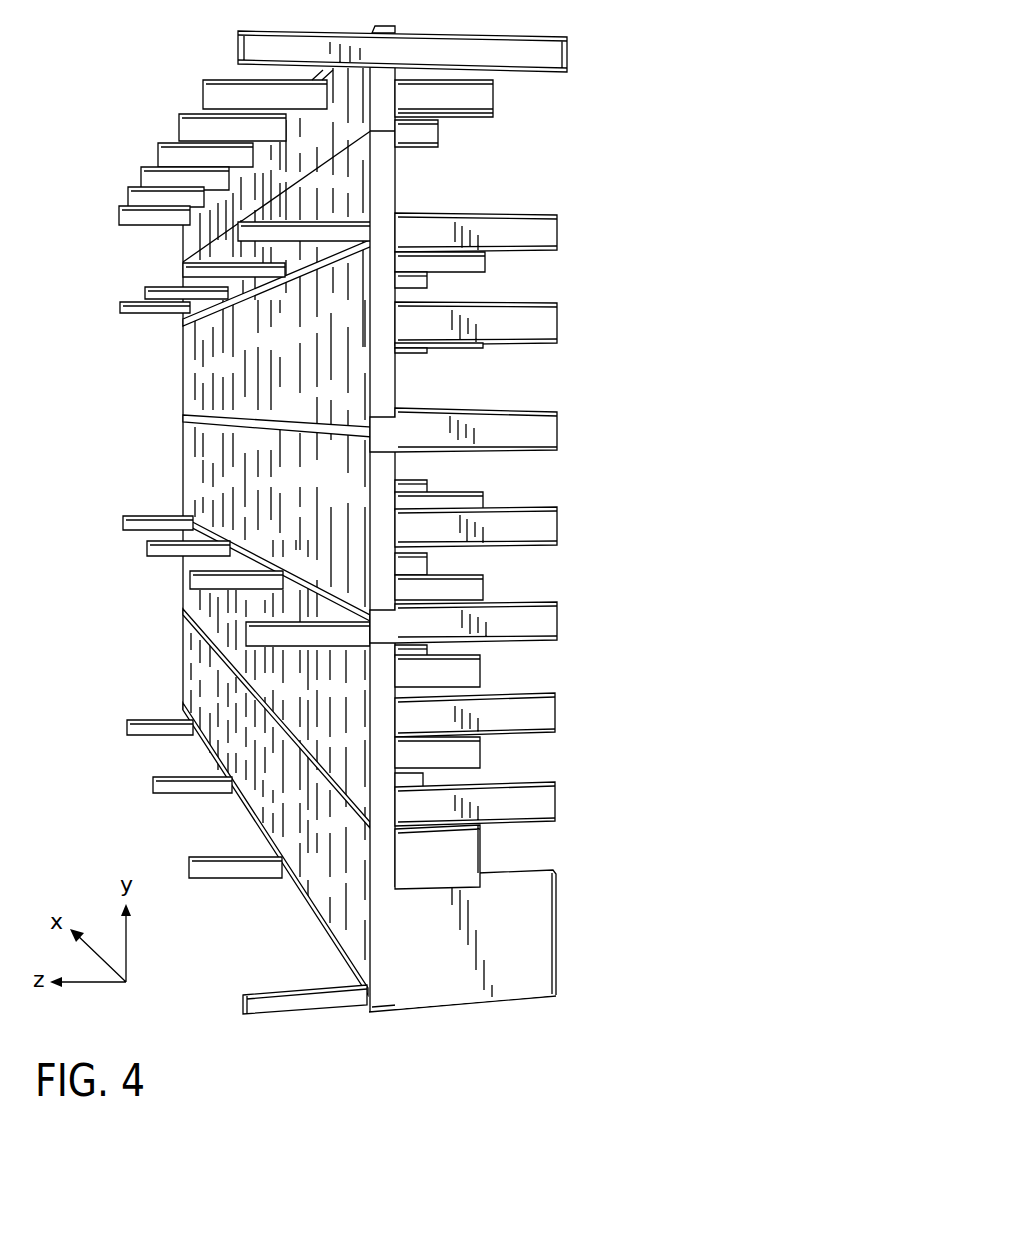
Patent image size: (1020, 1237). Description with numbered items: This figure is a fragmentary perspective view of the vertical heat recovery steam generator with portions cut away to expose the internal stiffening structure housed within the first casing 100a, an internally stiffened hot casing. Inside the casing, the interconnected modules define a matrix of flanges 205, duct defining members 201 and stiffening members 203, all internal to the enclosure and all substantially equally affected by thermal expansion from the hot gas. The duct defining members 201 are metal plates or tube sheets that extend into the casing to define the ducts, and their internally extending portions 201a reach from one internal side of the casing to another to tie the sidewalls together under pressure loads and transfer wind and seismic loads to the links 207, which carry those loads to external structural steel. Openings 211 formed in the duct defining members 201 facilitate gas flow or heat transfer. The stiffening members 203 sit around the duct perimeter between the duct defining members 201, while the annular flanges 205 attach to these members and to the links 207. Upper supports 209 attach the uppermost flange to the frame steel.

The first casing 100a is at (415, 538).
The duct defining members 201 is at (385, 758).
The internally extending portions 201a is at (548, 232).
The stiffening members 203 is at (345, 888).
The flanges 205 is at (243, 292).
The links 207 is at (312, 1000).
The upper supports 209 is at (515, 36).
The openings 211 is at (520, 482).